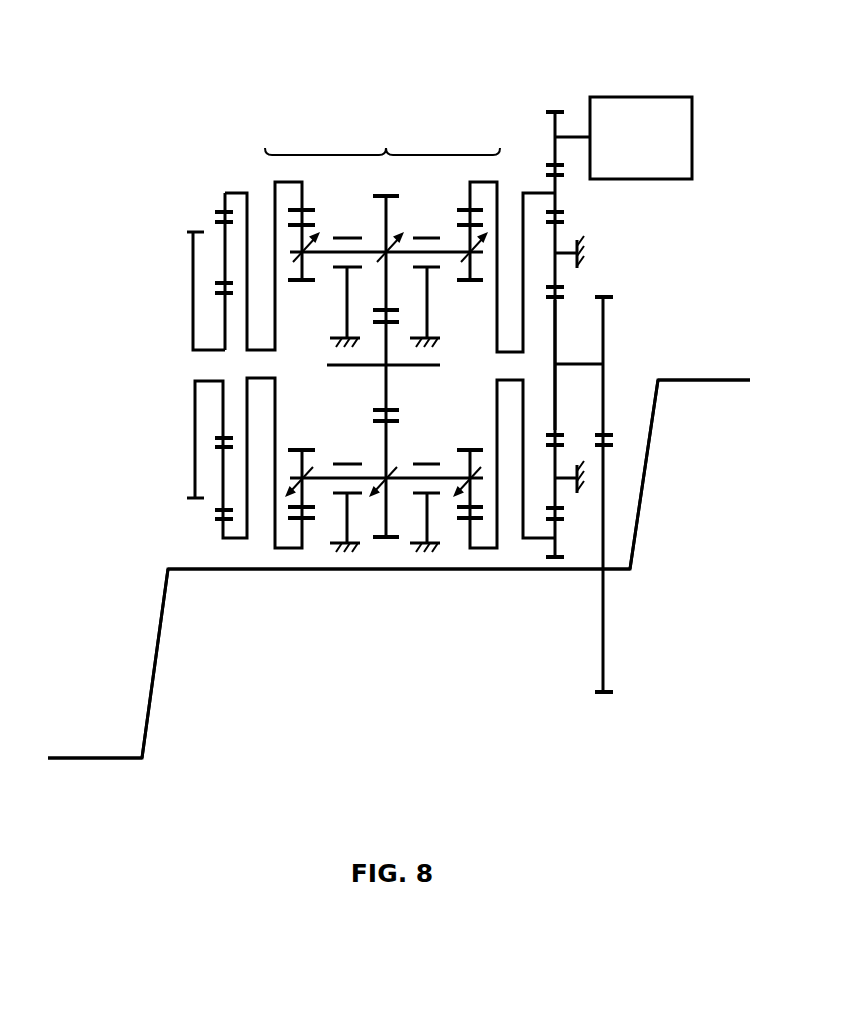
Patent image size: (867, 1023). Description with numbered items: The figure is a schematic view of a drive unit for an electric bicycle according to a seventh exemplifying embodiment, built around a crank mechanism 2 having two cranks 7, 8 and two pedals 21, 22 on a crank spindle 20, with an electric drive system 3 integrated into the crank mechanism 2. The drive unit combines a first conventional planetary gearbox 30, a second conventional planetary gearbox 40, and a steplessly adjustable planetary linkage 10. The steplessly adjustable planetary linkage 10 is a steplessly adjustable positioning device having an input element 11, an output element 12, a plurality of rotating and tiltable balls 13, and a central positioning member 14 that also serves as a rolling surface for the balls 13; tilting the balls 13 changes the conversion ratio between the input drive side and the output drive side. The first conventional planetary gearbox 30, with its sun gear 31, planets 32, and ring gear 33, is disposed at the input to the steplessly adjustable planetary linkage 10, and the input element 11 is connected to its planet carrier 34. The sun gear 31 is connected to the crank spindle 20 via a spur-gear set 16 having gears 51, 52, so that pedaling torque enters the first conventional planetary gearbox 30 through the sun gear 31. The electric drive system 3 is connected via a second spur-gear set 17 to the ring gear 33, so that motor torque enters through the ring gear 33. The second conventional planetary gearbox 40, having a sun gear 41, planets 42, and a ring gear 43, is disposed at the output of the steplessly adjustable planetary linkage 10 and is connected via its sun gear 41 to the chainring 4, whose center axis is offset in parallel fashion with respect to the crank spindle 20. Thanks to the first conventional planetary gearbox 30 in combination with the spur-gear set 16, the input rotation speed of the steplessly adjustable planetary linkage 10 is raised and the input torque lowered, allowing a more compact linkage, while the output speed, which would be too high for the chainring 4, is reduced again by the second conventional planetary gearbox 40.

The crank mechanism 2 is at (652, 562).
The electric drive system 3 is at (657, 117).
The chainring 4 is at (193, 316).
The crank 7 is at (647, 472).
The crank 8 is at (155, 675).
The steplessly adjustable planetary linkage 10 is at (382, 232).
The input element 11 is at (498, 195).
The output element 12 is at (275, 190).
The balls 13 is at (371, 244).
The central positioning member 14 is at (385, 383).
The spur-gear set 16 is at (624, 355).
The second spur-gear set 17 is at (541, 130).
The crank spindle 20 is at (370, 572).
The pedal 21 is at (735, 378).
The pedal 22 is at (95, 760).
The first conventional planetary gearbox 30 is at (566, 306).
The sun gear 31 is at (555, 398).
The planets 32 is at (557, 235).
The ring gear 33 is at (557, 185).
The planet carrier 34 is at (563, 480).
The second conventional planetary gearbox 40 is at (213, 258).
The sun gear 41 is at (223, 405).
The planets 42 is at (223, 472).
The ring gear 43 is at (223, 528).
The gear 51 is at (605, 618).
The gear 52 is at (613, 320).